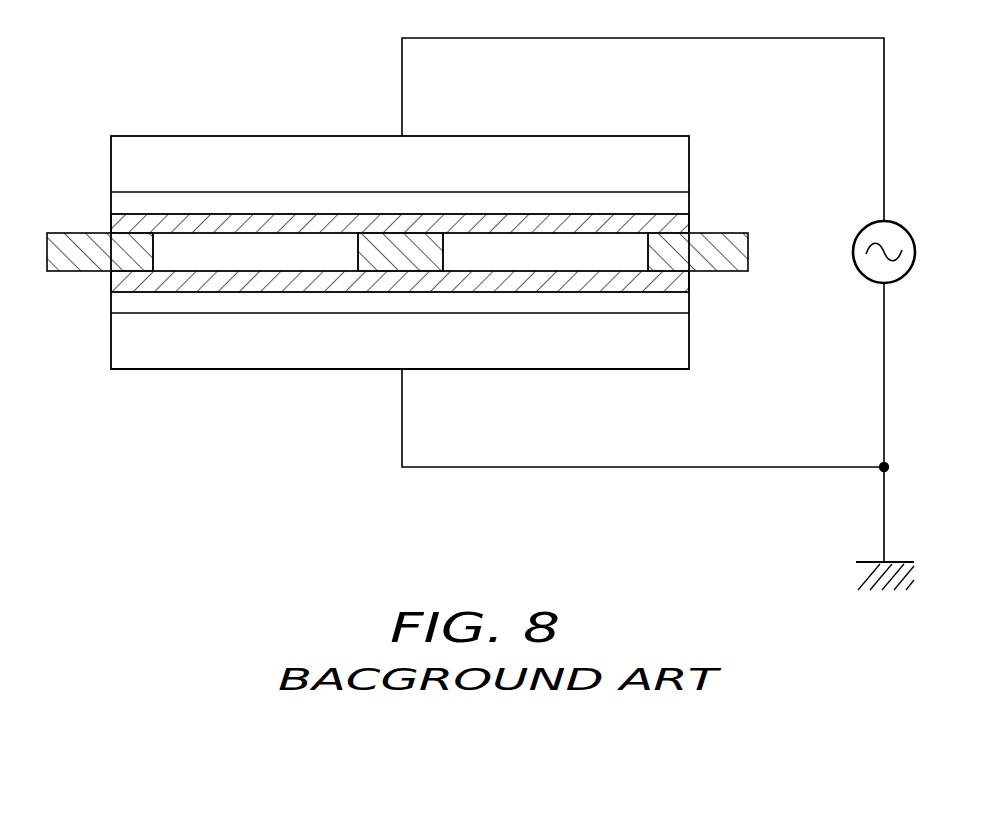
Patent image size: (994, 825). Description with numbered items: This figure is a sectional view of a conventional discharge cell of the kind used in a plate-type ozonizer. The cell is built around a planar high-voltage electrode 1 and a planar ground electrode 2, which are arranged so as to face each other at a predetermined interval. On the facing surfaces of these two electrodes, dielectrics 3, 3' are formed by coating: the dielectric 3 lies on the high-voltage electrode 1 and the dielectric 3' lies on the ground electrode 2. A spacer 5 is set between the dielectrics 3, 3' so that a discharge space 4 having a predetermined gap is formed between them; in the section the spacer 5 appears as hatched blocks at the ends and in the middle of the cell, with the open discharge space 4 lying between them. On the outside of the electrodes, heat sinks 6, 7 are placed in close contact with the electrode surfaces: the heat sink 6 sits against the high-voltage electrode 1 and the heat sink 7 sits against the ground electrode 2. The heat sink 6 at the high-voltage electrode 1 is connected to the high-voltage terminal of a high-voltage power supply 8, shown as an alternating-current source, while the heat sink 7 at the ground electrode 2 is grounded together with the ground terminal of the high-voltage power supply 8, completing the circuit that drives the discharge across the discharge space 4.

The high-voltage electrode 1 is at (187, 137).
The ground electrode 2 is at (275, 313).
The dielectric 3 is at (400, 186).
The dielectric 3' is at (432, 295).
The discharge space 4 is at (505, 242).
The spacer 5 is at (725, 233).
The heat sink 6 is at (275, 192).
The heat sink 7 is at (187, 369).
The high-voltage power supply 8 is at (862, 236).